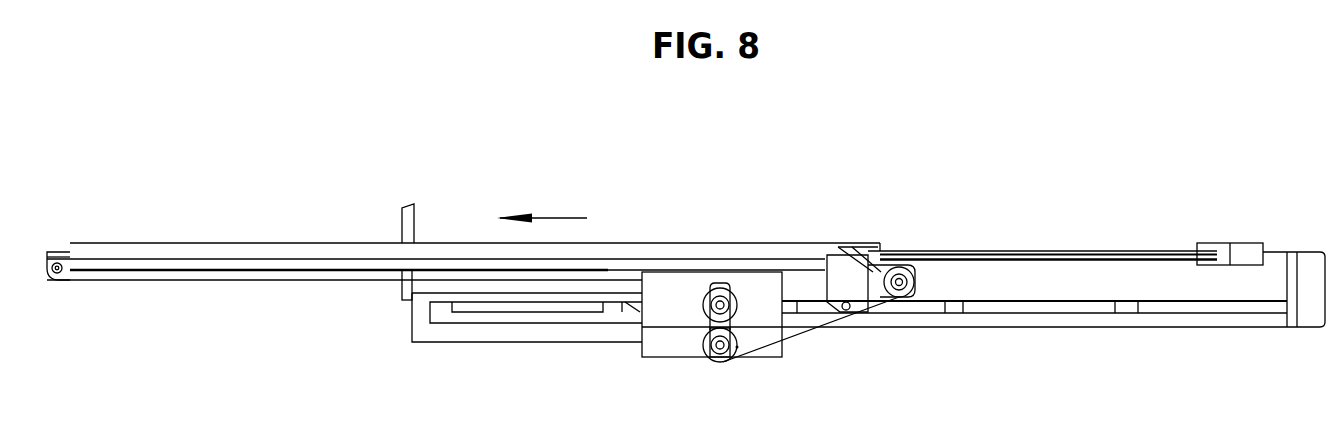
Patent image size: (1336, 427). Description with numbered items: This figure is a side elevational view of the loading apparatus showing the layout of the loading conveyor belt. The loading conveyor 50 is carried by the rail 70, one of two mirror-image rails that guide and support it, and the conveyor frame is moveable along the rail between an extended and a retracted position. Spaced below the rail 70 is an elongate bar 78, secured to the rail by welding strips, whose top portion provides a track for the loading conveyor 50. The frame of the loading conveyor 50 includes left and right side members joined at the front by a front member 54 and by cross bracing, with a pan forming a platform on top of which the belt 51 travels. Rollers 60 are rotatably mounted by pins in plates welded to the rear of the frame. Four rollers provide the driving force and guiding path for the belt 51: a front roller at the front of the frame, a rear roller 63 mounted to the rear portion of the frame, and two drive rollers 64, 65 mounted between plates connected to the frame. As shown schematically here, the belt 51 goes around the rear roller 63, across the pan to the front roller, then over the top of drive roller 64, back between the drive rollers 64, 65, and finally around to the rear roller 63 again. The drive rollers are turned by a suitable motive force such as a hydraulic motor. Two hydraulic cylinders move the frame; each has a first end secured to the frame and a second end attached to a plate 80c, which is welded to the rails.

The loading conveyor 50 is at (313, 222).
The belt 51 is at (160, 280).
The front member 54 is at (57, 279).
The rollers 60 is at (848, 310).
The rear roller 63 is at (873, 268).
The drive roller 64 is at (716, 306).
The drive roller 65 is at (720, 350).
The rail 70 is at (1250, 288).
The elongate bar 78 is at (1012, 322).
The plate 80c is at (1243, 247).